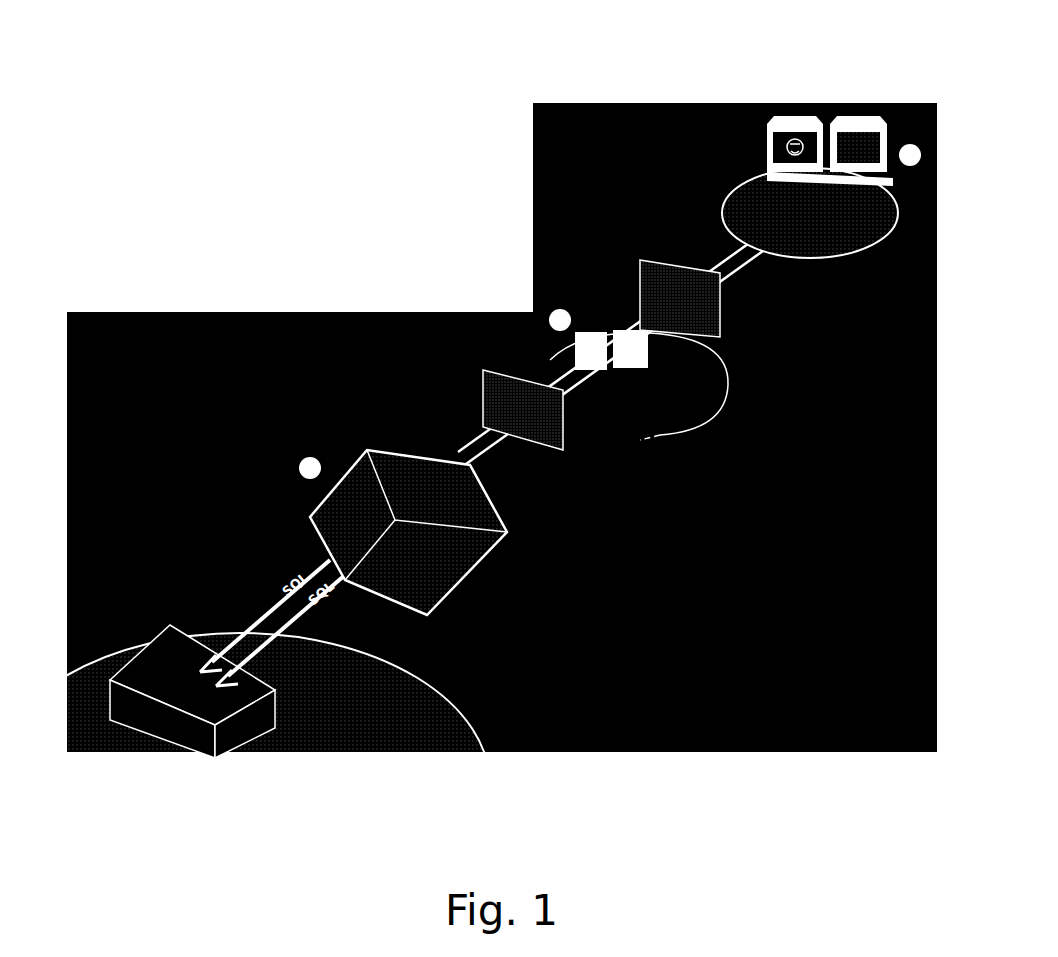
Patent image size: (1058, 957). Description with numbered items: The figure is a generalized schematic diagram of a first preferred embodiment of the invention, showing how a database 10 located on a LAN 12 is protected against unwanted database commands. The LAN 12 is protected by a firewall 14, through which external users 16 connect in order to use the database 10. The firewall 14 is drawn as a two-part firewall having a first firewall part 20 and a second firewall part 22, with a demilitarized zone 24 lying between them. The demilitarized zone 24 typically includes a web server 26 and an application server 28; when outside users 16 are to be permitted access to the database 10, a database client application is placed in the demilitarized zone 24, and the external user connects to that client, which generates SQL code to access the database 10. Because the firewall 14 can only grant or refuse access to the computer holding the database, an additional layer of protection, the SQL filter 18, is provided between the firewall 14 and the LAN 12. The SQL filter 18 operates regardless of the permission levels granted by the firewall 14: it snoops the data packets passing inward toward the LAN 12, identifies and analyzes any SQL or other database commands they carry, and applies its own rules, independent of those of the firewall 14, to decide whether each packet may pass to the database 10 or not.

The database 10 is at (212, 718).
The LAN 12 is at (483, 752).
The firewall 14 is at (483, 375).
The external users 16 is at (845, 118).
The SQL filter 18 is at (340, 455).
The first firewall part 20 is at (470, 392).
The second firewall part 22 is at (643, 260).
The demilitarized zone 24 is at (513, 295).
The web server 26 is at (595, 332).
The application server 28 is at (628, 330).